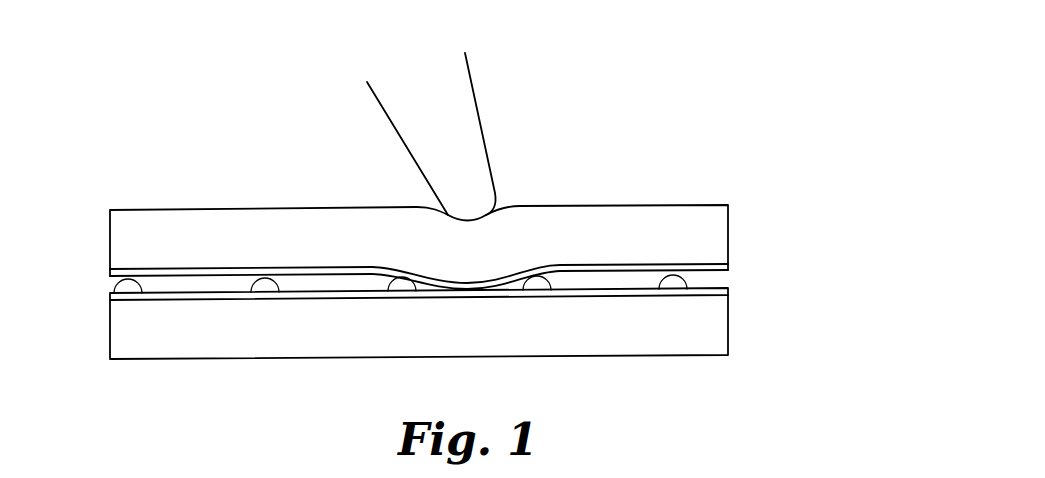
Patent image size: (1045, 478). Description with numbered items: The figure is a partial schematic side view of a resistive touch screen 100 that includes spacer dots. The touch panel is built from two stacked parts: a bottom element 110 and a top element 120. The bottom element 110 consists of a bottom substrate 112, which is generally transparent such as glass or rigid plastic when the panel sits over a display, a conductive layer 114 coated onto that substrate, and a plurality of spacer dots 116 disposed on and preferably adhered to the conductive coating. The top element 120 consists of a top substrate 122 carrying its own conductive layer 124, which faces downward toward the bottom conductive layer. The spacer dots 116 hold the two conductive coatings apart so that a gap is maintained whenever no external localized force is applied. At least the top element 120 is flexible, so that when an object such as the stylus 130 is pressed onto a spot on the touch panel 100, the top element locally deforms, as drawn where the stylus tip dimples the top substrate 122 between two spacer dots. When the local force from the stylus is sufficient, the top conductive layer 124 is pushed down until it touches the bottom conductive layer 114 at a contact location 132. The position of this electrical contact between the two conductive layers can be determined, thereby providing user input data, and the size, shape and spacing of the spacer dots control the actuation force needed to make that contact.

The resistive touch screen 100 is at (689, 84).
The bottom element 110 is at (464, 292).
The bottom substrate 112 is at (697, 343).
The conductive layer 114 is at (633, 292).
The spacer dots 116 is at (673, 275).
The top element 120 is at (375, 220).
The top substrate 122 is at (267, 222).
The conductive layer 124 is at (105, 278).
The stylus 130 is at (465, 98).
The contact location 132 is at (472, 291).